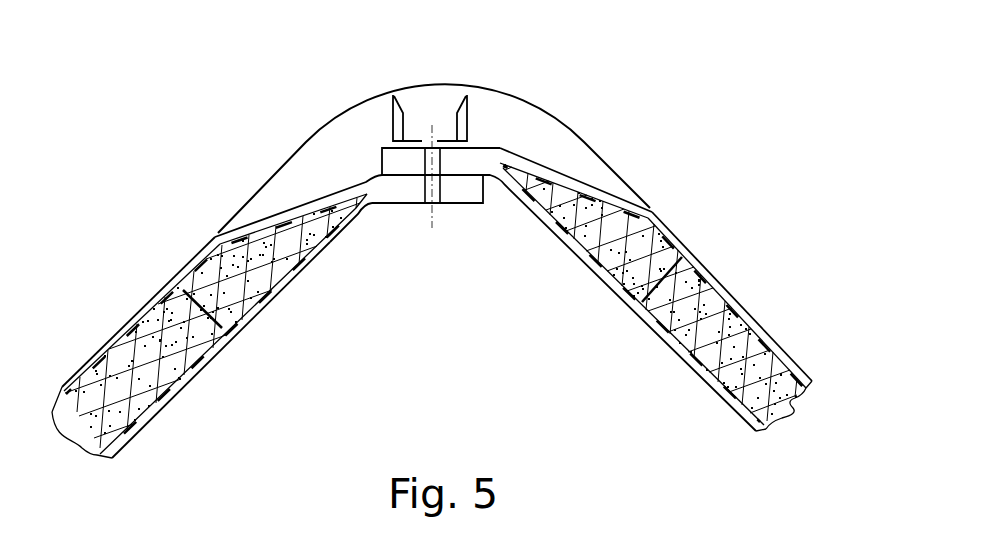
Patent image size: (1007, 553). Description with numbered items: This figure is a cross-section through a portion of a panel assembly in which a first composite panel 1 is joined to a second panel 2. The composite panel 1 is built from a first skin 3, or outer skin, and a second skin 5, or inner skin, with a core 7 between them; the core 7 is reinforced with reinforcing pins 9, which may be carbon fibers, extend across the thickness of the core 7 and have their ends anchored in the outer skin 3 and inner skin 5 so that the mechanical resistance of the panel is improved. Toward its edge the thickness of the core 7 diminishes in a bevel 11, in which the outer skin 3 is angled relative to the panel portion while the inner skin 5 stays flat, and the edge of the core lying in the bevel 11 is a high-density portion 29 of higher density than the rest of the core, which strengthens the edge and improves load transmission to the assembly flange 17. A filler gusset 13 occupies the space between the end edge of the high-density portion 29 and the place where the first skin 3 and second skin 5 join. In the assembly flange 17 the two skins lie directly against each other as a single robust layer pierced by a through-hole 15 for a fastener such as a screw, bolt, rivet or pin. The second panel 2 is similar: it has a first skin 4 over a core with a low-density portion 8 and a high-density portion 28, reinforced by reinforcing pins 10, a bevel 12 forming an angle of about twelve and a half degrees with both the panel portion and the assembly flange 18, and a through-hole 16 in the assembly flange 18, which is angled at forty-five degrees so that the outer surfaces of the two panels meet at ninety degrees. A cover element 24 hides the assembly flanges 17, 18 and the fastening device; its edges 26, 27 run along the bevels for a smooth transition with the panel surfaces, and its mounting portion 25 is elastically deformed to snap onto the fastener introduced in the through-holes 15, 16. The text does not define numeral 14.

The composite panel 1 is at (110, 298).
The second panel 2 is at (720, 252).
The first skin 3 is at (197, 262).
The first skin 4 is at (746, 313).
The second skin 5 is at (305, 268).
The core 7 is at (143, 392).
The low-density portion 8 is at (745, 398).
The reinforcing pins 9 is at (205, 348).
The reinforcing pins 10 is at (768, 362).
The bevel 11 is at (97, 205).
The bevel 12 is at (680, 210).
The filler gusset 13 is at (357, 210).
The cover layer tapered end 14 is at (530, 180).
The through-hole 15 is at (428, 178).
The through-hole 16 is at (438, 200).
The assembly flange 17 is at (487, 218).
The assembly flange 18 is at (478, 138).
The cover element 24 is at (522, 84).
The mounting portion 25 is at (403, 125).
The edge 26 is at (210, 207).
The edge 27 is at (649, 195).
The high-density portion 28 is at (622, 268).
The high-density portion 29 is at (248, 290).